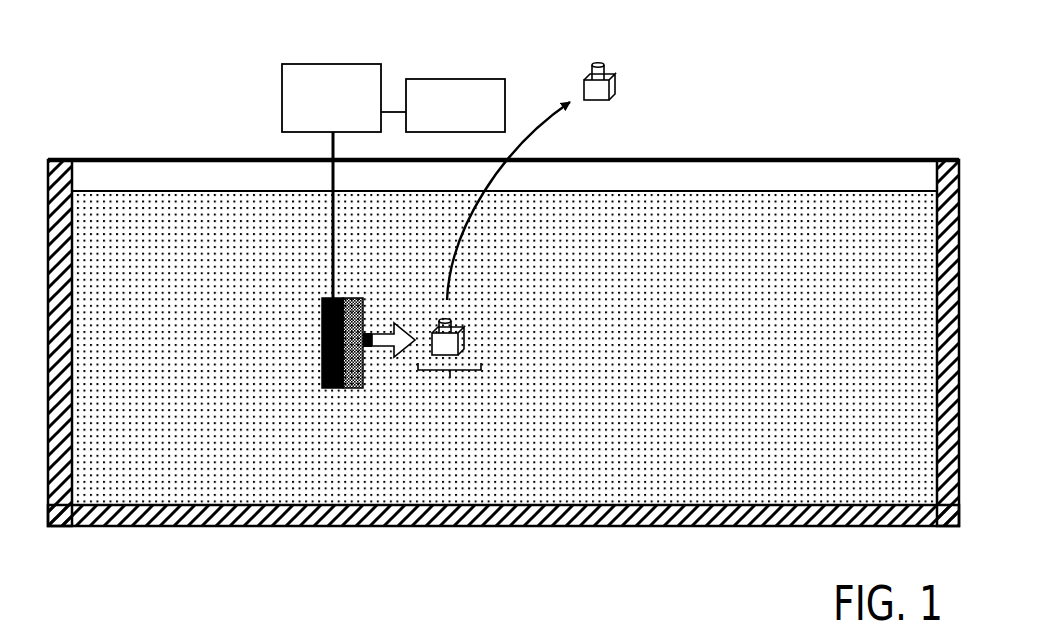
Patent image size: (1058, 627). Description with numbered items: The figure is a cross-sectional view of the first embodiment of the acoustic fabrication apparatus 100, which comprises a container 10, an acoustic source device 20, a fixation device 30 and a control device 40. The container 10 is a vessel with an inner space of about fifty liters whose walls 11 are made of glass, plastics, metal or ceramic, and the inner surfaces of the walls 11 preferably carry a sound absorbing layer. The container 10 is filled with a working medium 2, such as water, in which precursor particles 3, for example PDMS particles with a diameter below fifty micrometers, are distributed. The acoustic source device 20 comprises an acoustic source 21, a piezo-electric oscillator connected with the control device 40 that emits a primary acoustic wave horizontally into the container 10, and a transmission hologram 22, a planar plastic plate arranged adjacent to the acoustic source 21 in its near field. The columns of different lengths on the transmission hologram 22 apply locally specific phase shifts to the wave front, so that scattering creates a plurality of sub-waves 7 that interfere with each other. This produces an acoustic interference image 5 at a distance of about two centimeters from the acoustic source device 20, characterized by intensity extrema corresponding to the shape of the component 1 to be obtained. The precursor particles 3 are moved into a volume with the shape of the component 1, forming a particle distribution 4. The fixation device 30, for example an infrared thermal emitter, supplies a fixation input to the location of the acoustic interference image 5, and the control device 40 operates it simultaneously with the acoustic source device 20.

The component 1 is at (608, 88).
The working medium 2 is at (190, 210).
The precursor particles 3 is at (497, 144).
The particle distribution 4 is at (463, 346).
The acoustic interference image 5 is at (449, 390).
The sub-waves 7 is at (392, 336).
The container 10 is at (913, 497).
The walls 11 is at (937, 346).
The acoustic source device 20 is at (341, 309).
The acoustic source 21 is at (322, 389).
The transmission hologram 22 is at (363, 389).
The fixation device 30 is at (499, 127).
The control device 40 is at (373, 127).
The acoustic fabrication apparatus 100 is at (811, 144).